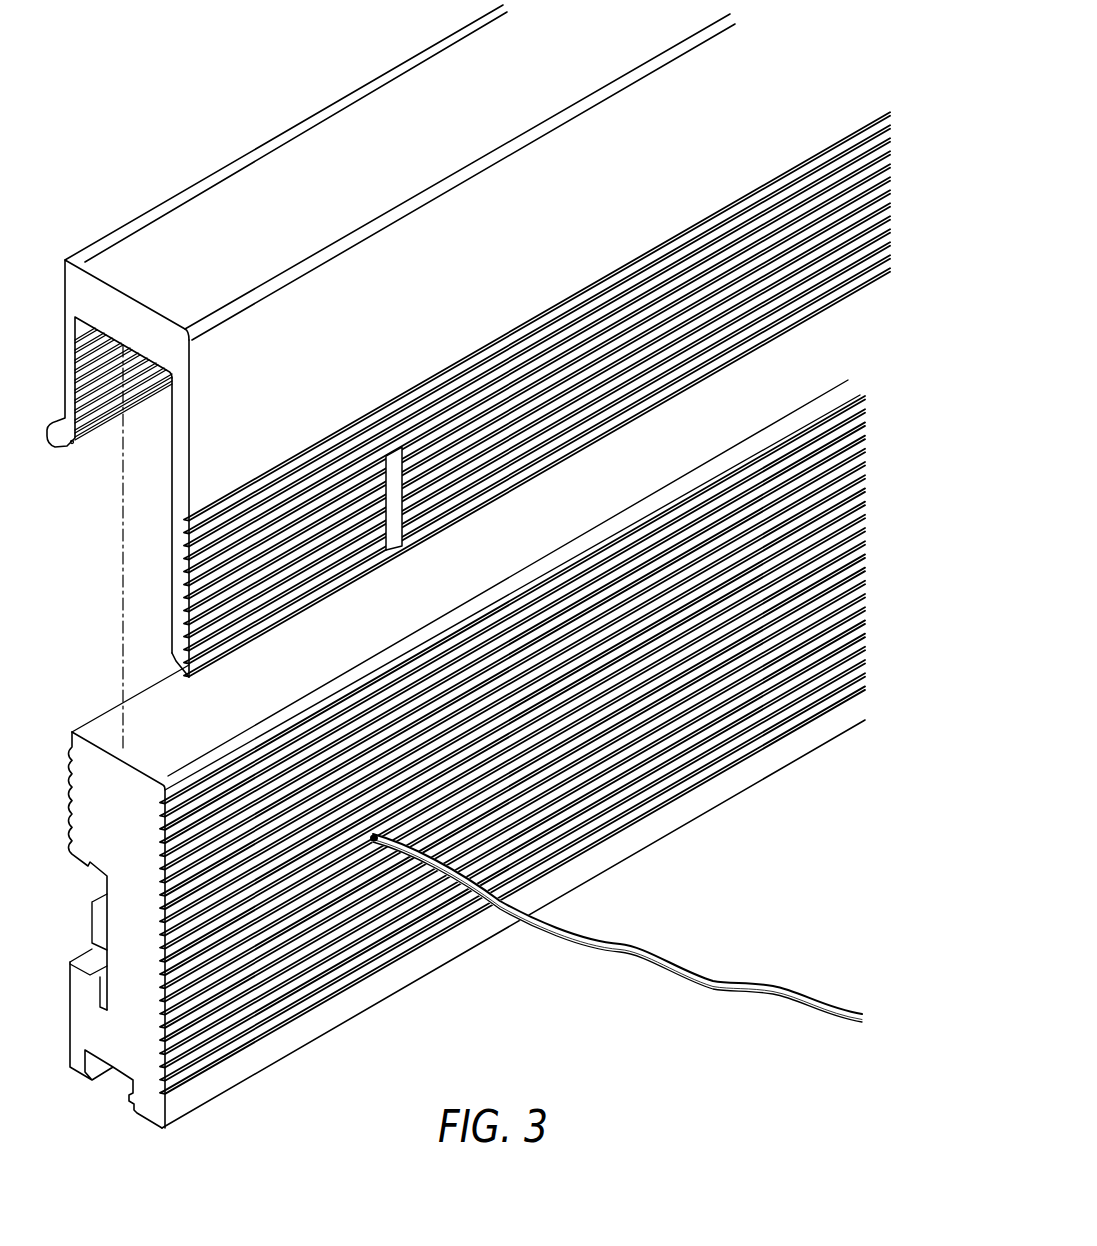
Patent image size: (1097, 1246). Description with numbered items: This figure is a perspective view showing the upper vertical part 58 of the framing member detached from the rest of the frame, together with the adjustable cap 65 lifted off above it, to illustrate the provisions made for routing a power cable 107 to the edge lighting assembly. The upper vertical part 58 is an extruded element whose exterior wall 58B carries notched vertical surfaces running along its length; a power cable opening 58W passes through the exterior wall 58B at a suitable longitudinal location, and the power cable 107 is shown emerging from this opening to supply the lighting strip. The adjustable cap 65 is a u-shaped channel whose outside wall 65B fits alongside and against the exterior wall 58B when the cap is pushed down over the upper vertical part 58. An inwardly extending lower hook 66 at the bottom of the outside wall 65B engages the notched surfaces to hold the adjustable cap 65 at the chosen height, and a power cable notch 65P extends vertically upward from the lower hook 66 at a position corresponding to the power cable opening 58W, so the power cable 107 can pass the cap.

The adjustable cap 65 is at (116, 227).
The outside wall 65B is at (213, 442).
The lower hook 66 is at (168, 653).
The power cable notch 65P is at (405, 549).
The upper vertical part 58 is at (70, 1012).
The exterior wall 58B is at (225, 1073).
The power cable opening 58W is at (374, 842).
The power cable 107 is at (717, 983).